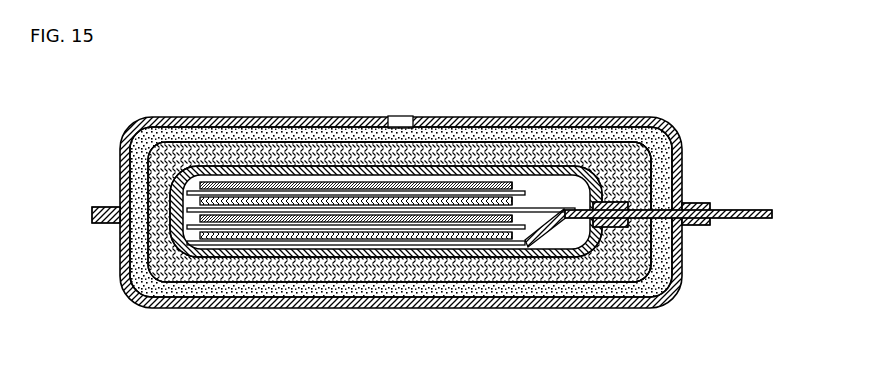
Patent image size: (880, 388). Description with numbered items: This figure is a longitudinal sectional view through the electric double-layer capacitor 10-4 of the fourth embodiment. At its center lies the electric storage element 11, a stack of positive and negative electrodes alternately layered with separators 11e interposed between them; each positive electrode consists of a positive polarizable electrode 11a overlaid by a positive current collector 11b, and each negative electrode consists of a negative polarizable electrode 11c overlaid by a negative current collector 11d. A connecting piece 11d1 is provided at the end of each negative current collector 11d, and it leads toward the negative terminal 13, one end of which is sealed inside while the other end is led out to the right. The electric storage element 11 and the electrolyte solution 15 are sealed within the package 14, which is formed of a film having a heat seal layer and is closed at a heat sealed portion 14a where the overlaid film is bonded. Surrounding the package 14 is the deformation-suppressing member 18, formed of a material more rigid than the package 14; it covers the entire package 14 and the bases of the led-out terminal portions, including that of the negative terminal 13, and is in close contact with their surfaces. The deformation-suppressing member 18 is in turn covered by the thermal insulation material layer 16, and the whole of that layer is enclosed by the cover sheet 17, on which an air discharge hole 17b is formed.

The electric double-layer capacitor 10-4 is at (191, 112).
The electric storage element 11 is at (224, 185).
The positive polarizable electrode 11a is at (256, 195).
The positive current collector 11b is at (292, 207).
The negative polarizable electrode 11c is at (330, 219).
The negative current collector 11d is at (367, 195).
The connecting piece 11d1 is at (538, 240).
The separator 11e is at (479, 209).
The negative terminal 13 is at (745, 209).
The package 14 is at (539, 165).
The heat sealed portion 14a is at (621, 204).
The electrolyte solution 15 is at (574, 171).
The thermal insulation material layer 16 is at (512, 134).
The cover sheet 17 is at (561, 121).
The air discharge hole 17b is at (402, 119).
The deformation-suppressing member 18 is at (446, 153).